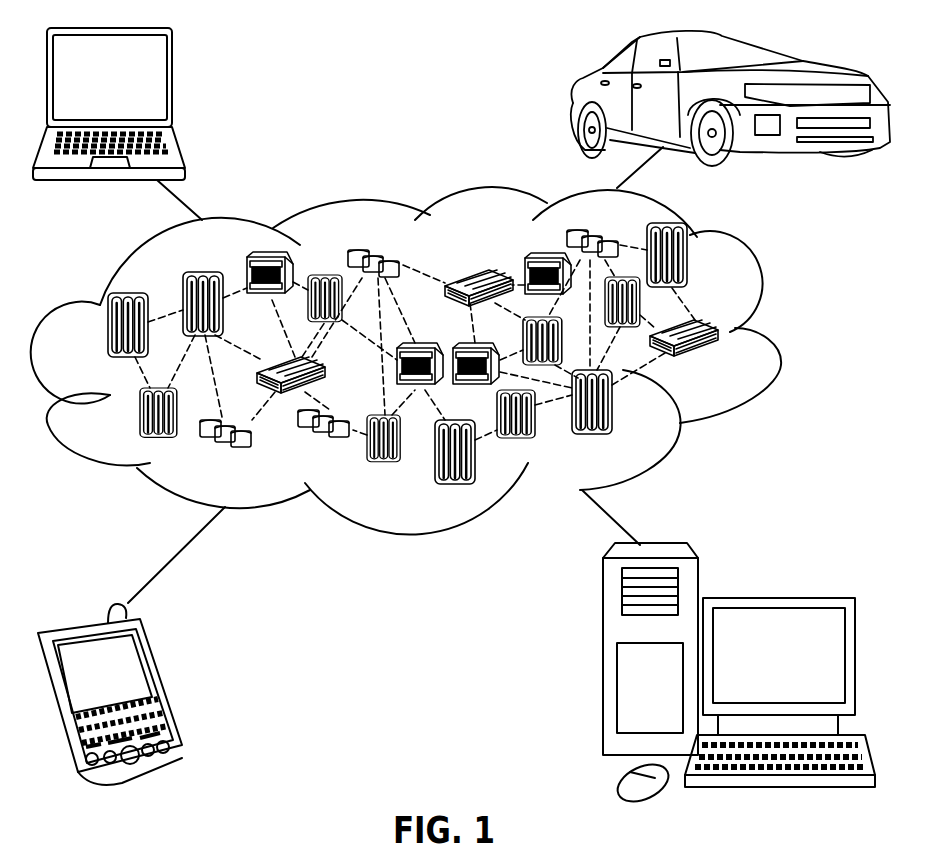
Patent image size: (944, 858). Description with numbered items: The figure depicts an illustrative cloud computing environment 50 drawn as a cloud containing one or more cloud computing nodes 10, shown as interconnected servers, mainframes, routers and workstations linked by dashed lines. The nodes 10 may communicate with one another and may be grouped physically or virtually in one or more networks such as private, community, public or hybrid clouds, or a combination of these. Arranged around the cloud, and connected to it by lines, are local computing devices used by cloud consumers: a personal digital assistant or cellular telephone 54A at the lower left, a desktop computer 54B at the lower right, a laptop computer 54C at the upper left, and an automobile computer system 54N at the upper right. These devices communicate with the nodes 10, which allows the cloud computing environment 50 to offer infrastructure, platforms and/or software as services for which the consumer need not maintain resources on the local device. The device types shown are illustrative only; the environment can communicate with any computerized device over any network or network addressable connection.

The cloud computing node 10 is at (721, 361).
The cloud computing environment 50 is at (777, 334).
The personal digital assistant or cellular telephone 54A is at (163, 686).
The desktop computer 54B is at (777, 596).
The laptop computer 54C is at (174, 86).
The automobile computer system 54N is at (574, 101).